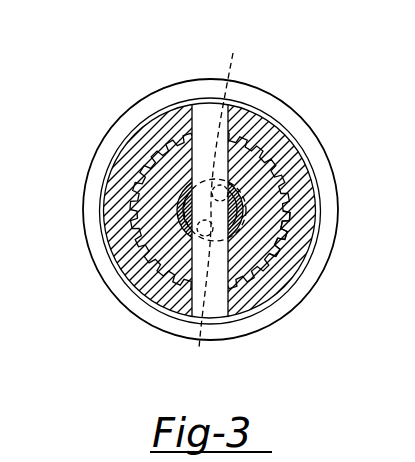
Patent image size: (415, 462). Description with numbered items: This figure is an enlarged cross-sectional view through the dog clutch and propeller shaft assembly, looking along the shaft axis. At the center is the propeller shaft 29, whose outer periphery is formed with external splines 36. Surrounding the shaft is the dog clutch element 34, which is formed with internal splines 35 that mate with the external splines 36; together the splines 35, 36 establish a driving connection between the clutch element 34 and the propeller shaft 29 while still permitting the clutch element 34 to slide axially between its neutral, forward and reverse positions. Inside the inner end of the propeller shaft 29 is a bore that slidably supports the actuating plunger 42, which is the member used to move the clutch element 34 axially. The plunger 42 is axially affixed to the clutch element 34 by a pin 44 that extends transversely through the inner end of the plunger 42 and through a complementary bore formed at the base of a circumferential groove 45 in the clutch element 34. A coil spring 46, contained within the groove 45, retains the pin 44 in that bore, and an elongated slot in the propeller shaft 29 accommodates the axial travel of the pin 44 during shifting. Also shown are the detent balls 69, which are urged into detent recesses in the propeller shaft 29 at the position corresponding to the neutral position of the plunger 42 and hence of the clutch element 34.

The propeller shaft 29 is at (170, 257).
The dog clutch element 34 is at (266, 82).
The internal splines 35 is at (283, 197).
The external splines 36 is at (140, 245).
The actuating plunger 42 is at (176, 206).
The pin 44 is at (203, 101).
The circumferential groove 45 is at (295, 122).
The coil spring 46 is at (300, 140).
The detent balls 69 is at (213, 206).